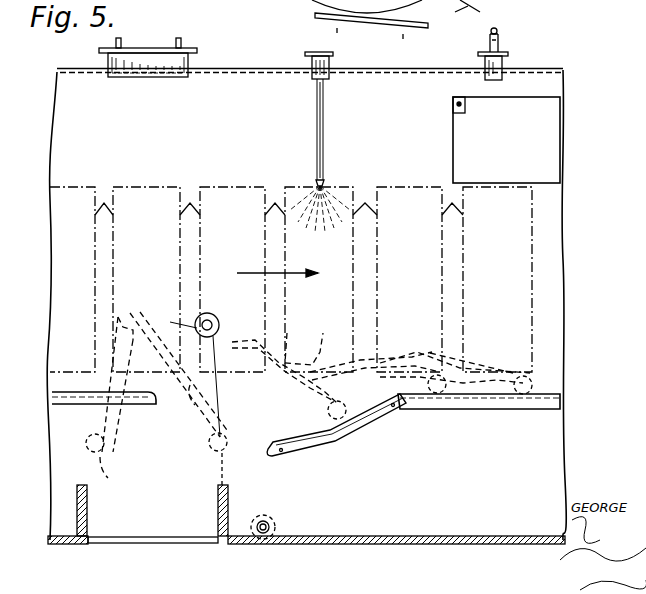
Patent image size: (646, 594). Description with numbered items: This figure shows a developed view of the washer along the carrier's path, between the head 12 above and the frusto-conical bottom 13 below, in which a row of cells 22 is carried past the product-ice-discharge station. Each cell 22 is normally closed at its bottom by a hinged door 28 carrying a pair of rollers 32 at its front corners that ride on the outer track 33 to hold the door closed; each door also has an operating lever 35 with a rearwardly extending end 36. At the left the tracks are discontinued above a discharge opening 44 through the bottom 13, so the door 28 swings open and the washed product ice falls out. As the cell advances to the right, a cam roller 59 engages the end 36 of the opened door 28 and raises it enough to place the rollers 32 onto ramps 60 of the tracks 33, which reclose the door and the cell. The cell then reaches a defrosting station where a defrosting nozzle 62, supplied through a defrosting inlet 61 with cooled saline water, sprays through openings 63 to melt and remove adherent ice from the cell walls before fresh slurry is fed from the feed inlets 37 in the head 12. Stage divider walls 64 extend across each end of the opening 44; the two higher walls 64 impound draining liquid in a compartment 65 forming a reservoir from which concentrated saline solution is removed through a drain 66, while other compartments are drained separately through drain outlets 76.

The head 12 is at (258, 68).
The frusto-conical bottom 13 is at (355, 540).
The cells 22 is at (160, 190).
The door 28 is at (195, 415).
The rollers 32 is at (418, 410).
The outer track 33 is at (70, 394).
The operating lever 35 is at (284, 340).
The rearwardly extending end 36 is at (172, 318).
The feed inlets 37 is at (505, 52).
The discharge opening 44 is at (162, 540).
The cam roller 59 is at (213, 313).
The ramps 60 is at (300, 432).
The defrosting inlet 61 is at (332, 62).
The defrosting nozzle 62 is at (323, 172).
The openings 63 is at (315, 181).
The stage divider walls 64 is at (77, 506).
The compartment 65 is at (435, 514).
The drain 66 is at (268, 520).
The drain outlets 76 is at (466, 12).